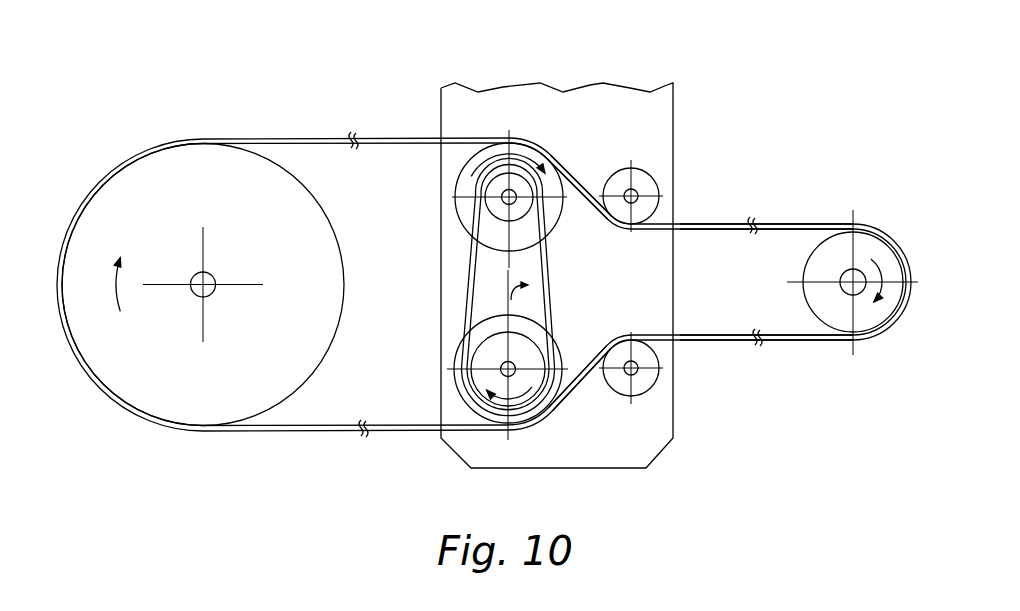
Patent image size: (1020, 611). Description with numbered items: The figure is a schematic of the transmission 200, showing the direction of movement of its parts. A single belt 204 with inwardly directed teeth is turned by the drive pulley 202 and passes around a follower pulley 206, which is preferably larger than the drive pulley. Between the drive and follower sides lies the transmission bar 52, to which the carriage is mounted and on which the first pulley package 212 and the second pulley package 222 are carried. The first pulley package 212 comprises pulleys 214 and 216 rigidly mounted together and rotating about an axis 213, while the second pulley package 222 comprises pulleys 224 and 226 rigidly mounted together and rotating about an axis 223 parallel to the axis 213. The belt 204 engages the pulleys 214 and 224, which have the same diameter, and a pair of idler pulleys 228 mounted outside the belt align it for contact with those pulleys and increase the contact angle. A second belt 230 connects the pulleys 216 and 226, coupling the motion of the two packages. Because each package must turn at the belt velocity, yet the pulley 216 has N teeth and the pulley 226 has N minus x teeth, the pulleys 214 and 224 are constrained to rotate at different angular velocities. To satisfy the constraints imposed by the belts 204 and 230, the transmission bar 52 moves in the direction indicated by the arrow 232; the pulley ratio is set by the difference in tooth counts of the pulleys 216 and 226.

The transmission 200 is at (415, 101).
The transmission bar 52 is at (673, 135).
The drive pulley 202 is at (872, 323).
The belt 204 is at (732, 223).
The follower pulley 206 is at (205, 421).
The first pulley package 212 is at (462, 392).
The axis 213 is at (505, 367).
The pulley 214 is at (556, 356).
The pulley 216 is at (539, 405).
The second pulley package 222 is at (452, 188).
The axis 223 is at (507, 198).
The pulley 224 is at (562, 181).
The pulley 226 is at (528, 222).
The idler pulleys 228 is at (659, 184).
The belt 230 is at (468, 293).
The arrow 232 is at (541, 292).